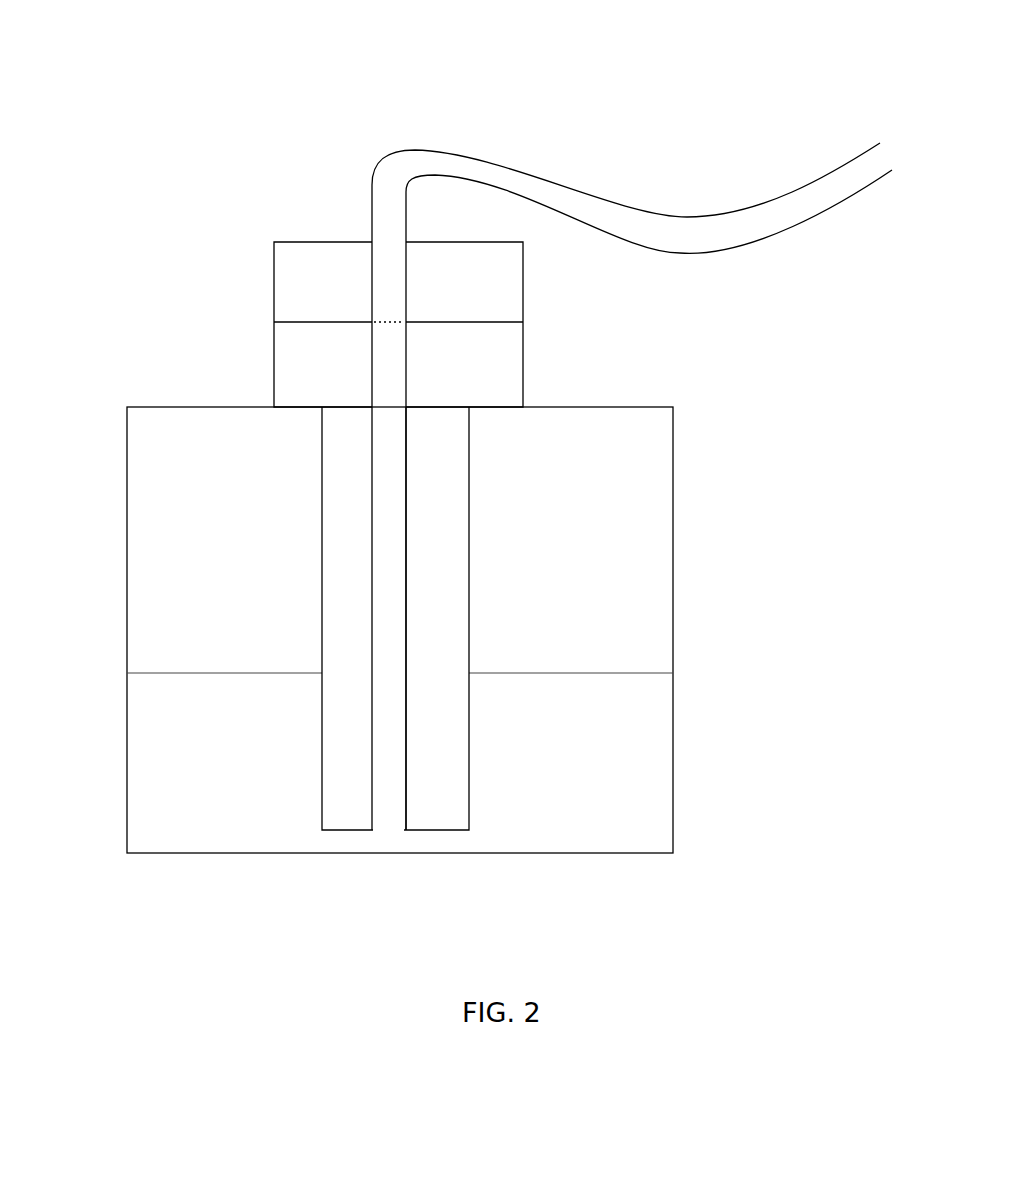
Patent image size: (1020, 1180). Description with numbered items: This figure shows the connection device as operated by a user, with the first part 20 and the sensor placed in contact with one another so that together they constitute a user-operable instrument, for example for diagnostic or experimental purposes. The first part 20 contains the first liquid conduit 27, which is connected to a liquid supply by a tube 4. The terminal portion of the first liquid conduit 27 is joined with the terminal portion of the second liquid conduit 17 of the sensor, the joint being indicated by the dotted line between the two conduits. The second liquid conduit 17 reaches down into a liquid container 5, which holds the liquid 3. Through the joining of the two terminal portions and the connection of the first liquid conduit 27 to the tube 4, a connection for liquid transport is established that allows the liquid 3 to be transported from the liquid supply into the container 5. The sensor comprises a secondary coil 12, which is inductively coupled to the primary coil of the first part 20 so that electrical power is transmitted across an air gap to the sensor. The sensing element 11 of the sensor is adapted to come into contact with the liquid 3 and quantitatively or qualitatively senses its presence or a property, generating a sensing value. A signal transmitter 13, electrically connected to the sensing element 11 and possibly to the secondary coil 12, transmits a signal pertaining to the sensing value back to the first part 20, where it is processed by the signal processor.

The liquid 3 is at (210, 812).
The tube 4 is at (447, 150).
The liquid container 5 is at (127, 462).
The sensing element 11 is at (340, 500).
The secondary coil 12 is at (289, 345).
The signal transmitter 13 is at (470, 363).
The second liquid conduit 17 is at (406, 448).
The first part 20 is at (318, 263).
The first liquid conduit 27 is at (406, 320).